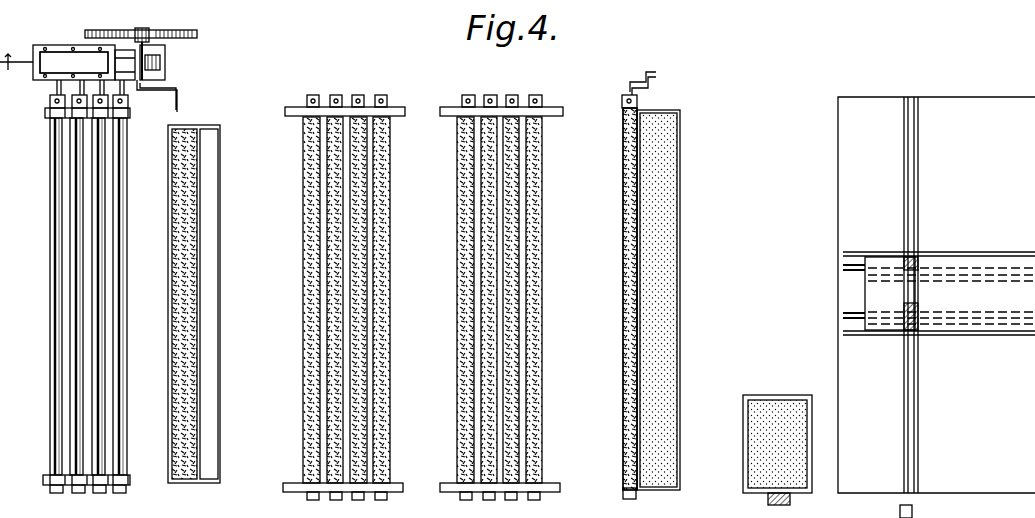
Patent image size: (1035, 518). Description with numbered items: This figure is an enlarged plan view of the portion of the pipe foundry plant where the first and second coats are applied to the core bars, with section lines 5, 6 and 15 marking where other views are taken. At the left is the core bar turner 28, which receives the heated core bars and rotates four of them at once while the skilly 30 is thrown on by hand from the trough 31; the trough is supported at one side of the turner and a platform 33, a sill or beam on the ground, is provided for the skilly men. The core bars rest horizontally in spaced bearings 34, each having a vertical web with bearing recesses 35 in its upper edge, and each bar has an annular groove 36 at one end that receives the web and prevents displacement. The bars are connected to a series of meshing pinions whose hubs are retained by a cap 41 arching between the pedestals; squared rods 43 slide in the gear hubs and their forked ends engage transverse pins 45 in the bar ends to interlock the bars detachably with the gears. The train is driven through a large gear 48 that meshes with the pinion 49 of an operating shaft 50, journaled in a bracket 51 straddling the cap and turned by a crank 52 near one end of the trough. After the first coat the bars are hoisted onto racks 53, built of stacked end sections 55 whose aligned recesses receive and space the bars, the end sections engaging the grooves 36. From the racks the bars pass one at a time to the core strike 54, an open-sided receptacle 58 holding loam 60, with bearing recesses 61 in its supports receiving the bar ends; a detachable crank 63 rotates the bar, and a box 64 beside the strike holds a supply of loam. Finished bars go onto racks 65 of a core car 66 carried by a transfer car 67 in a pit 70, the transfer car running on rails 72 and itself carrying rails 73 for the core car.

The section line 5— 5 is at (165, 358).
The section line 6— 6 is at (115, 296).
The section line 15— 15 is at (165, 62).
The core bar turner 28 is at (68, 40).
The skilly 30 is at (185, 411).
The trough 31 is at (200, 468).
The platform 33 is at (210, 303).
The bearings 34 is at (45, 118).
The bearing recesses 35 is at (110, 488).
The annular groove 36 is at (105, 108).
The cap 41 is at (74, 62).
The squared rods 43 is at (58, 90).
The transverse pins 45 is at (125, 108).
The large gear 48 is at (197, 34).
The shaft 49 is at (146, 37).
The operating shaft 50 is at (142, 29).
The bracket 51 is at (125, 62).
The crank 52 is at (180, 101).
The racks 53 is at (440, 480).
The core strike 54 is at (614, 299).
The end sections 55 is at (403, 116).
The receptacle 58 is at (677, 318).
The loam 60 is at (655, 393).
The bearing recesses 61 is at (620, 111).
The crank 63 is at (652, 78).
The box 64 is at (760, 495).
The racks 65 is at (912, 285).
The core car 66 is at (939, 293).
The transfer car 67 is at (853, 258).
The pit 70 is at (843, 186).
The rails 72 is at (915, 435).
The rails 73 is at (860, 315).